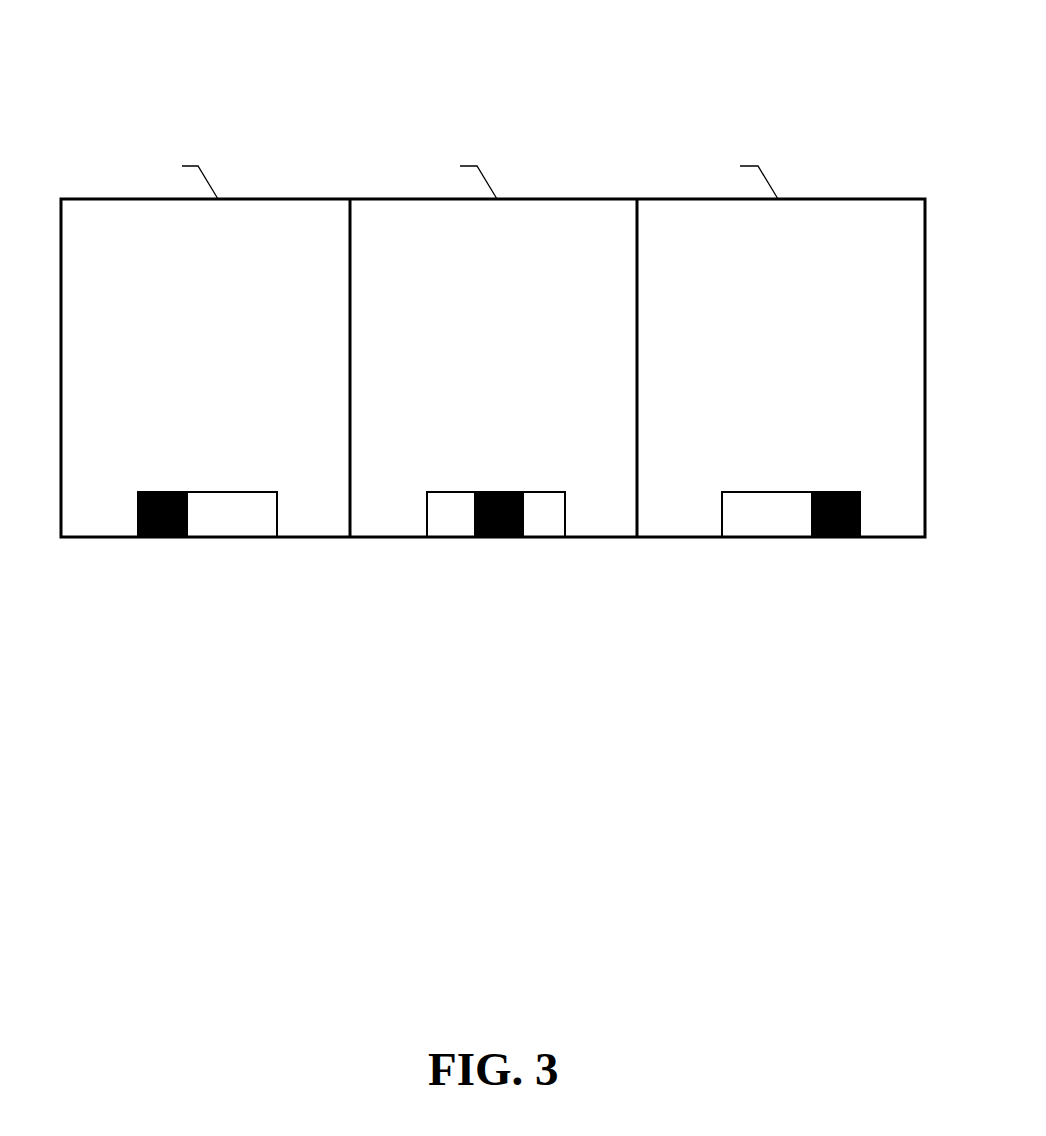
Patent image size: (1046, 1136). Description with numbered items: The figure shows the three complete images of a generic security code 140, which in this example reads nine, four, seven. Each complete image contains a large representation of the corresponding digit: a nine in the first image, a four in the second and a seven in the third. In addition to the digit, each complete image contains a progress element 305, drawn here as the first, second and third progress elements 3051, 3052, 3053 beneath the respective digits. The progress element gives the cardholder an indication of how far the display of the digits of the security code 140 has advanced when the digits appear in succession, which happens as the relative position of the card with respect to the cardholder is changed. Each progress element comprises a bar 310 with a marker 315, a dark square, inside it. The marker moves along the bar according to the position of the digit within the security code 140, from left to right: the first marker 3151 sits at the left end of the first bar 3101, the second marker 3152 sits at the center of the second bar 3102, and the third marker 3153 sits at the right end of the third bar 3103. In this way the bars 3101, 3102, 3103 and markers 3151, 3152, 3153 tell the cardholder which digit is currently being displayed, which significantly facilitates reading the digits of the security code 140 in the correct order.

The security code 140 is at (492, 63).
The progress element 305 is at (519, 483).
The first progress element 3051 is at (227, 475).
The second progress element 3052 is at (478, 477).
The third progress element 3053 is at (790, 477).
The bar 310 is at (566, 548).
The first bar 3101 is at (217, 522).
The second bar 3102 is at (540, 527).
The third bar 3103 is at (833, 540).
The marker 315 is at (457, 566).
The first marker 3151 is at (163, 540).
The second marker 3152 is at (492, 540).
The third marker 3153 is at (783, 522).